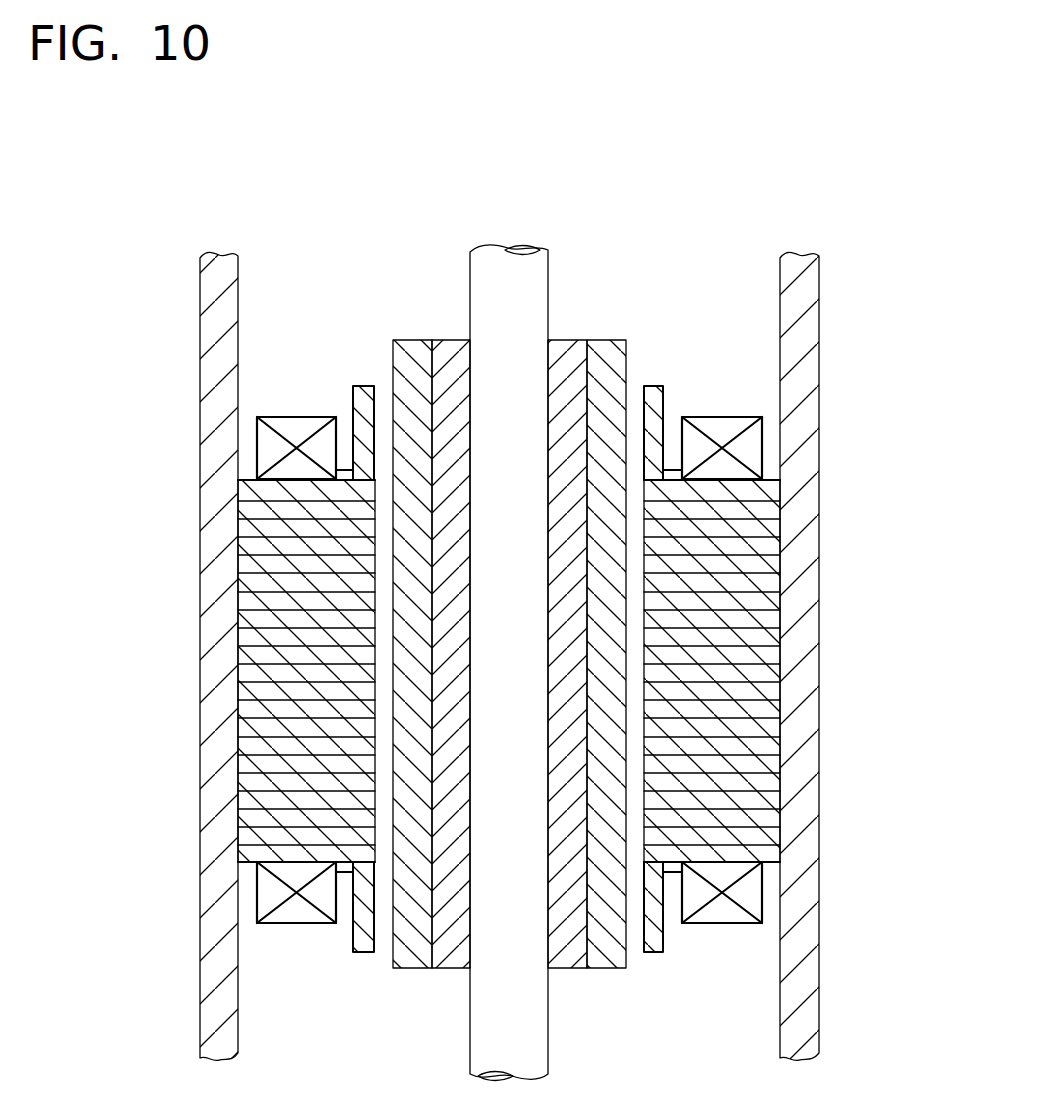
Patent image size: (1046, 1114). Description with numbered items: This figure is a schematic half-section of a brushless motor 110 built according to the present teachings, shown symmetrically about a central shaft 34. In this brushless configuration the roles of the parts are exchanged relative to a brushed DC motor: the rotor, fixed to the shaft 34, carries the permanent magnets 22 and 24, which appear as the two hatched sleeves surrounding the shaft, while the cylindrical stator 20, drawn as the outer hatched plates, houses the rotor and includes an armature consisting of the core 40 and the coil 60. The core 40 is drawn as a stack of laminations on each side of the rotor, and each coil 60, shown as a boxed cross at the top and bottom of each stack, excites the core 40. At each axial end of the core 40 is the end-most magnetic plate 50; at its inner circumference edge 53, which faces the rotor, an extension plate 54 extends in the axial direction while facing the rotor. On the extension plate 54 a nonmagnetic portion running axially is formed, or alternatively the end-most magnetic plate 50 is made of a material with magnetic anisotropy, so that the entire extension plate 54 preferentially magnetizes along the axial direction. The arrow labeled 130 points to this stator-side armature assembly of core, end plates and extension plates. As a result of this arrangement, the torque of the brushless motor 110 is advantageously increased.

The brushless motor 110 is at (846, 115).
The stator unit 130 is at (375, 243).
The stator 20 is at (225, 325).
The permanent magnet 22 is at (609, 356).
The permanent magnet 24 is at (413, 356).
The shaft 34 is at (497, 276).
The core 40 is at (258, 673).
The end-most magnetic plate 50 is at (252, 490).
The inner circumference edge 53 is at (363, 492).
The extension plate 54 is at (364, 396).
The coil 60 is at (296, 438).